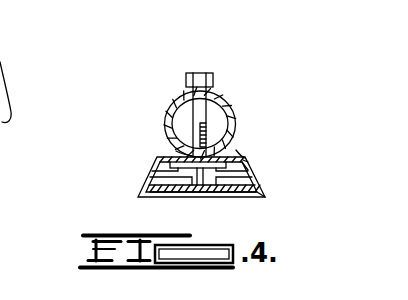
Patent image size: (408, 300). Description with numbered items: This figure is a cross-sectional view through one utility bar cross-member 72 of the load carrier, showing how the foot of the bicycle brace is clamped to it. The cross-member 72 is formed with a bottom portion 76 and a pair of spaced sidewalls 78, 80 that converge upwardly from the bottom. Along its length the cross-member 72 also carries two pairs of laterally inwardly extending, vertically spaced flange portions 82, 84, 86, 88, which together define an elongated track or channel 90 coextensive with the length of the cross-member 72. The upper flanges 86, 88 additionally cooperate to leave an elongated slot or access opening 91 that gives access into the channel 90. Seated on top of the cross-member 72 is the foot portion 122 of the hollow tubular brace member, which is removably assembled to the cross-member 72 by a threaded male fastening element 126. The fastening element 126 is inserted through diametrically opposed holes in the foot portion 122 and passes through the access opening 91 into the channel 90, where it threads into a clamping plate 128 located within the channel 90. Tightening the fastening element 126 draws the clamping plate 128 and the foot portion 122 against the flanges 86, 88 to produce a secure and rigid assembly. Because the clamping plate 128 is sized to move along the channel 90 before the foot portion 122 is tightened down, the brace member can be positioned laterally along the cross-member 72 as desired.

The cross-member 72 is at (157, 158).
The bottom portion 76 is at (176, 198).
The sidewall 78 is at (144, 186).
The sidewall 80 is at (266, 196).
The flange portion 82 is at (160, 165).
The flange portion 84 is at (248, 163).
The flange portion 86 is at (180, 152).
The flange portion 88 is at (240, 157).
The channel 90 is at (246, 158).
The access opening 91 is at (193, 128).
The foot portion 122 is at (166, 100).
The threaded male fastening element 126 is at (200, 73).
The threaded clamping plate 128 is at (200, 176).